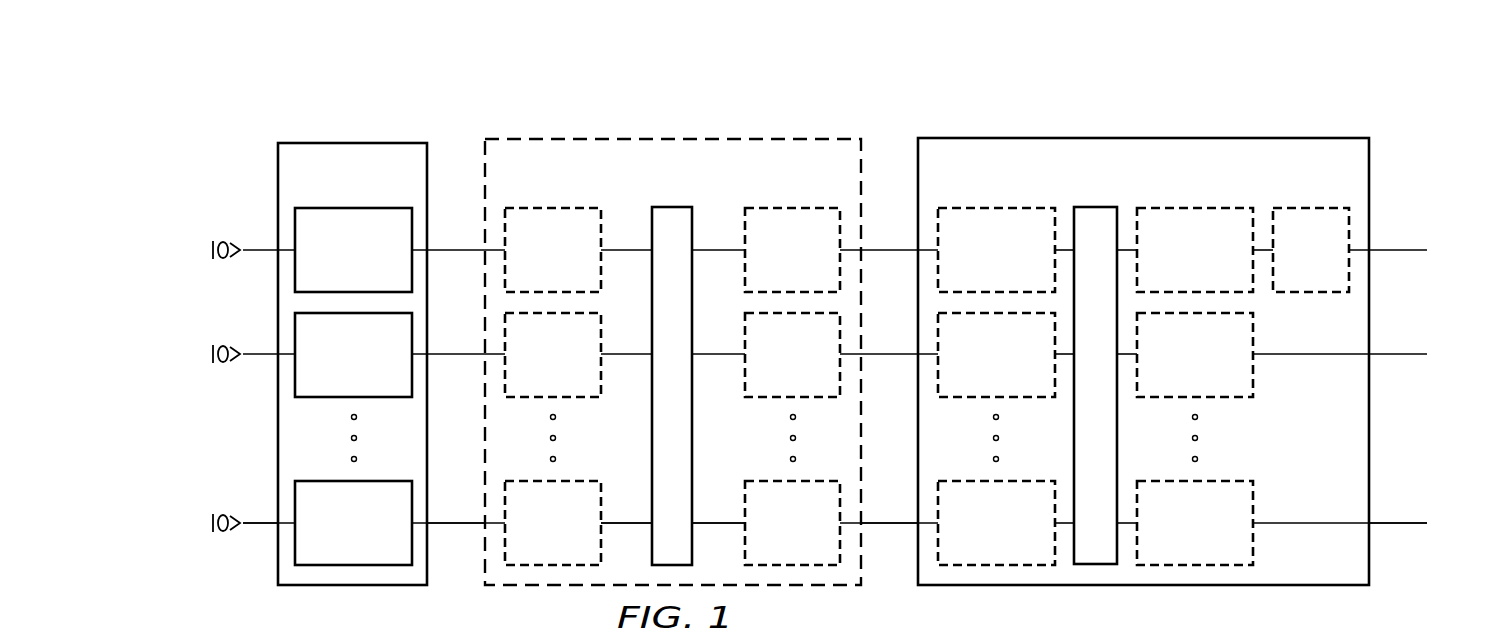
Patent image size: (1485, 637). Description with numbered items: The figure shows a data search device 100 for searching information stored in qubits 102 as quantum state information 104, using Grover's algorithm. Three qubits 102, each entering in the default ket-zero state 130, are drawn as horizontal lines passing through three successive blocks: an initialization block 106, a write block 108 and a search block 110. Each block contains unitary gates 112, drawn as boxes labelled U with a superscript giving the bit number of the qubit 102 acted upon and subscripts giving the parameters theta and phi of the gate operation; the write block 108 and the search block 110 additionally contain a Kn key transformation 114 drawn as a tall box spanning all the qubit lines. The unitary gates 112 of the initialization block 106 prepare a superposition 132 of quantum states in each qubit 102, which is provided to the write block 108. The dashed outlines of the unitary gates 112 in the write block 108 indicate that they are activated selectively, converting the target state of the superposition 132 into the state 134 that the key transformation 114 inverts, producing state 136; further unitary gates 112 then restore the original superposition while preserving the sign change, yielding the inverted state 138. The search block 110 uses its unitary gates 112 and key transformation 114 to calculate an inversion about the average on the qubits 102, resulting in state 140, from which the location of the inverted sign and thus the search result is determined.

The data search device 100 is at (1073, 54).
The qubits 102 is at (264, 247).
The quantum state information 104 is at (209, 250).
The initialization block 106 is at (350, 138).
The write block 108 is at (658, 133).
The search block 110 is at (1158, 132).
The unitary gates 112 is at (352, 207).
The Kn key transformation 114 is at (671, 207).
The default state 130 is at (265, 526).
The superposition state 132 is at (462, 521).
The converted target state 134 is at (638, 525).
The sign-inverted state 136 is at (730, 525).
The inverted state 138 is at (881, 525).
The search result state 140 is at (1390, 525).